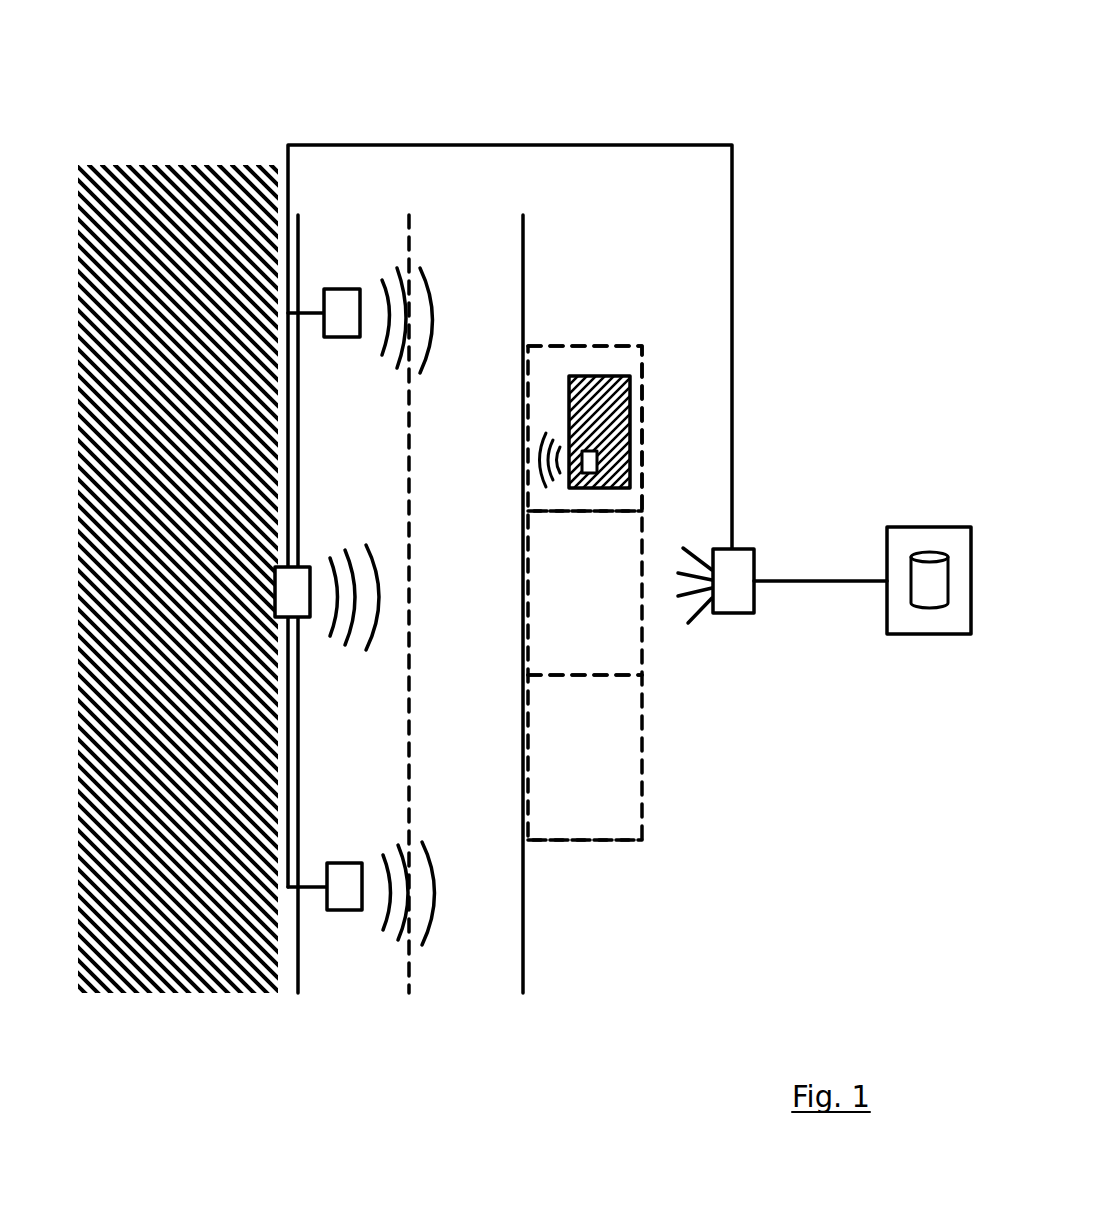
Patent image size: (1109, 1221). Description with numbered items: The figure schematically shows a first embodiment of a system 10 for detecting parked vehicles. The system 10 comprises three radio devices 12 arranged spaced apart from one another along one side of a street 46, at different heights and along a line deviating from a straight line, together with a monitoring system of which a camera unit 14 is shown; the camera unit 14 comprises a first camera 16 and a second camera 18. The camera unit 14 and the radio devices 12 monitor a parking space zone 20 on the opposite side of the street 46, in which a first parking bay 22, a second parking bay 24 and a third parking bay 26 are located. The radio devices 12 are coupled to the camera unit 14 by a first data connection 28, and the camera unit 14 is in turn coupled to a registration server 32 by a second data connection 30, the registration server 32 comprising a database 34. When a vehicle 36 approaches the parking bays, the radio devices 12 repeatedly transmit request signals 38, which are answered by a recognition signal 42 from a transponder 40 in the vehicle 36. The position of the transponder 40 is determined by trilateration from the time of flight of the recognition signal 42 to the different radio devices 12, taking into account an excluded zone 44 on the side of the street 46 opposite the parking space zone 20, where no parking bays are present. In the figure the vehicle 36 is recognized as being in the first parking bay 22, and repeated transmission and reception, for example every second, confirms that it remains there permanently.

The system 10 is at (785, 85).
The radio device 12 is at (336, 303).
The camera unit 14 is at (738, 568).
The first camera 16 is at (700, 602).
The second camera 18 is at (690, 545).
The parking space zone 20 is at (608, 848).
The first parking bay 22 is at (543, 365).
The second parking bay 24 is at (598, 614).
The third parking bay 26 is at (598, 785).
The first data connection 28 is at (735, 245).
The second data connection 30 is at (823, 585).
The registration server 32 is at (903, 537).
The database 34 is at (928, 592).
The vehicle 36 is at (617, 405).
The request signal 38 is at (432, 290).
The transponder 40 is at (588, 473).
The recognition signal 42 is at (538, 453).
The excluded zone 44 is at (203, 195).
The street 46 is at (465, 975).